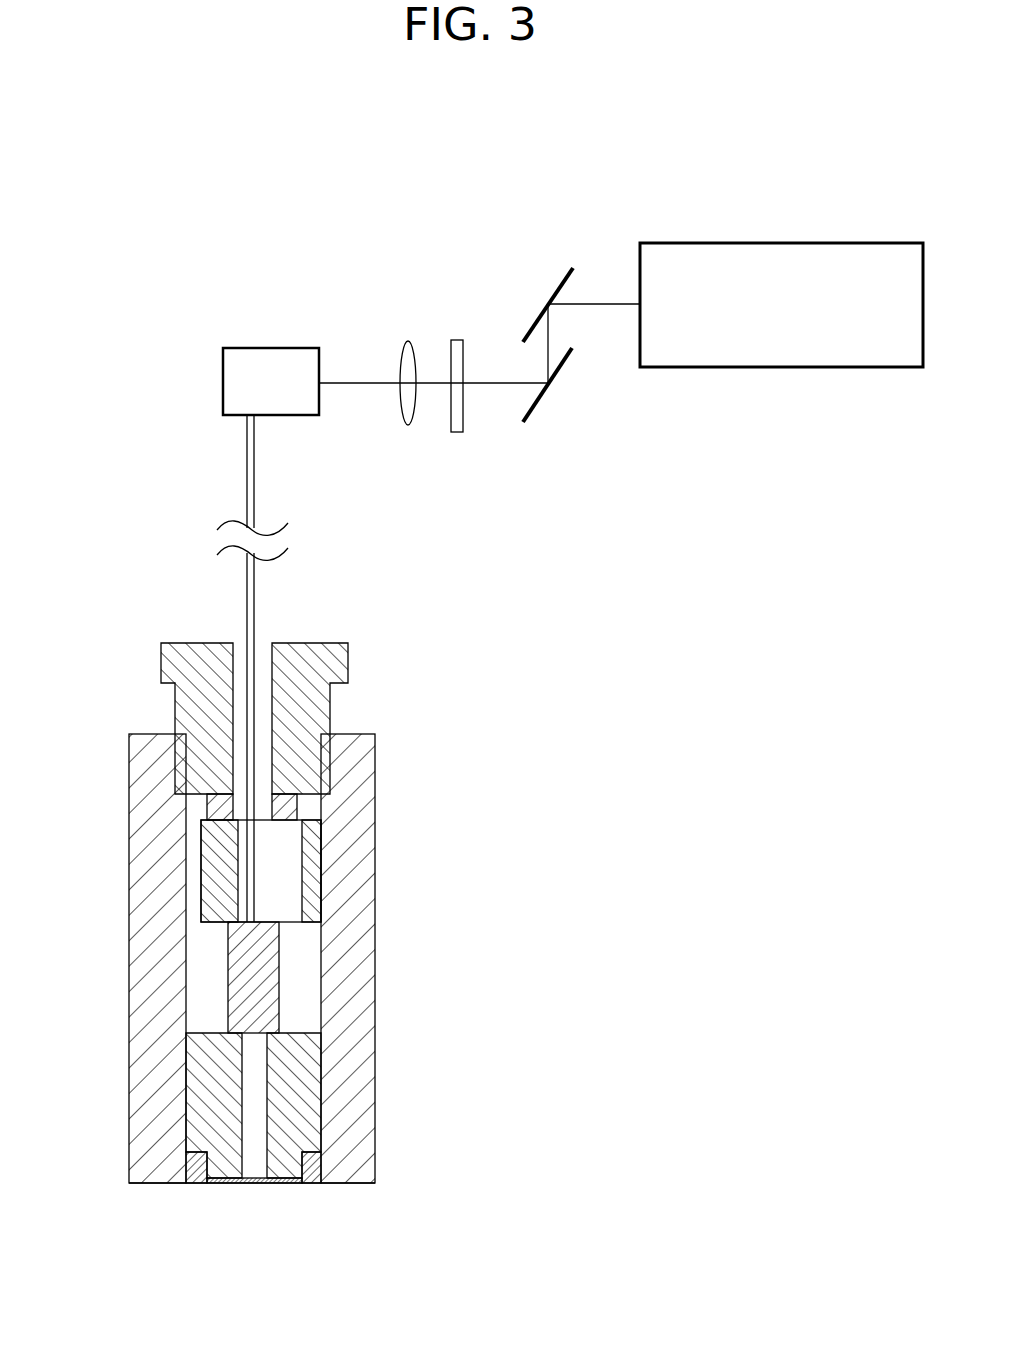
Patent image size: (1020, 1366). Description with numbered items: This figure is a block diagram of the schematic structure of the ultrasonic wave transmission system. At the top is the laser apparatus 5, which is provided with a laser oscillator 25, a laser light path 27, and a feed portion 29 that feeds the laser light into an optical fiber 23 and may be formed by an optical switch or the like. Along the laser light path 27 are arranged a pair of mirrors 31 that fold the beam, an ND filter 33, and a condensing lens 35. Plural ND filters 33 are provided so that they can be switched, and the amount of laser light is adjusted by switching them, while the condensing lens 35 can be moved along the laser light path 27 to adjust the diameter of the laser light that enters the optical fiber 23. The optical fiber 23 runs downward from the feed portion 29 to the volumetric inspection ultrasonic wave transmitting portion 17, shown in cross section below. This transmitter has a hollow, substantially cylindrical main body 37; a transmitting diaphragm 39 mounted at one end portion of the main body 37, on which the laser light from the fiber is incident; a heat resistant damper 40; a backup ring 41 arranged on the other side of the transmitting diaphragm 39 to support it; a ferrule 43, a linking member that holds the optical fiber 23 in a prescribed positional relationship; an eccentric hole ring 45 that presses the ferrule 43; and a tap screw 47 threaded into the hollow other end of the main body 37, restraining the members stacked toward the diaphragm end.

The laser apparatus 5 is at (514, 548).
The volumetric inspection ultrasonic wave transmitting portion 17 is at (466, 805).
The optical fiber 23 is at (255, 603).
The laser oscillator 25 is at (762, 243).
The laser light path 27 is at (477, 472).
The feed portion 29 is at (222, 376).
The mirror 31 is at (561, 285).
The ND filter 33 is at (455, 340).
The condensing lens 35 is at (401, 352).
The main body 37 is at (370, 972).
The transmitting diaphragm 39 is at (228, 1188).
The heat resistant damper 40 is at (310, 1188).
The backup ring 41 is at (327, 1080).
The ferrule 43 is at (235, 976).
The eccentric hole ring 45 is at (205, 863).
The tap screw 47 is at (333, 713).